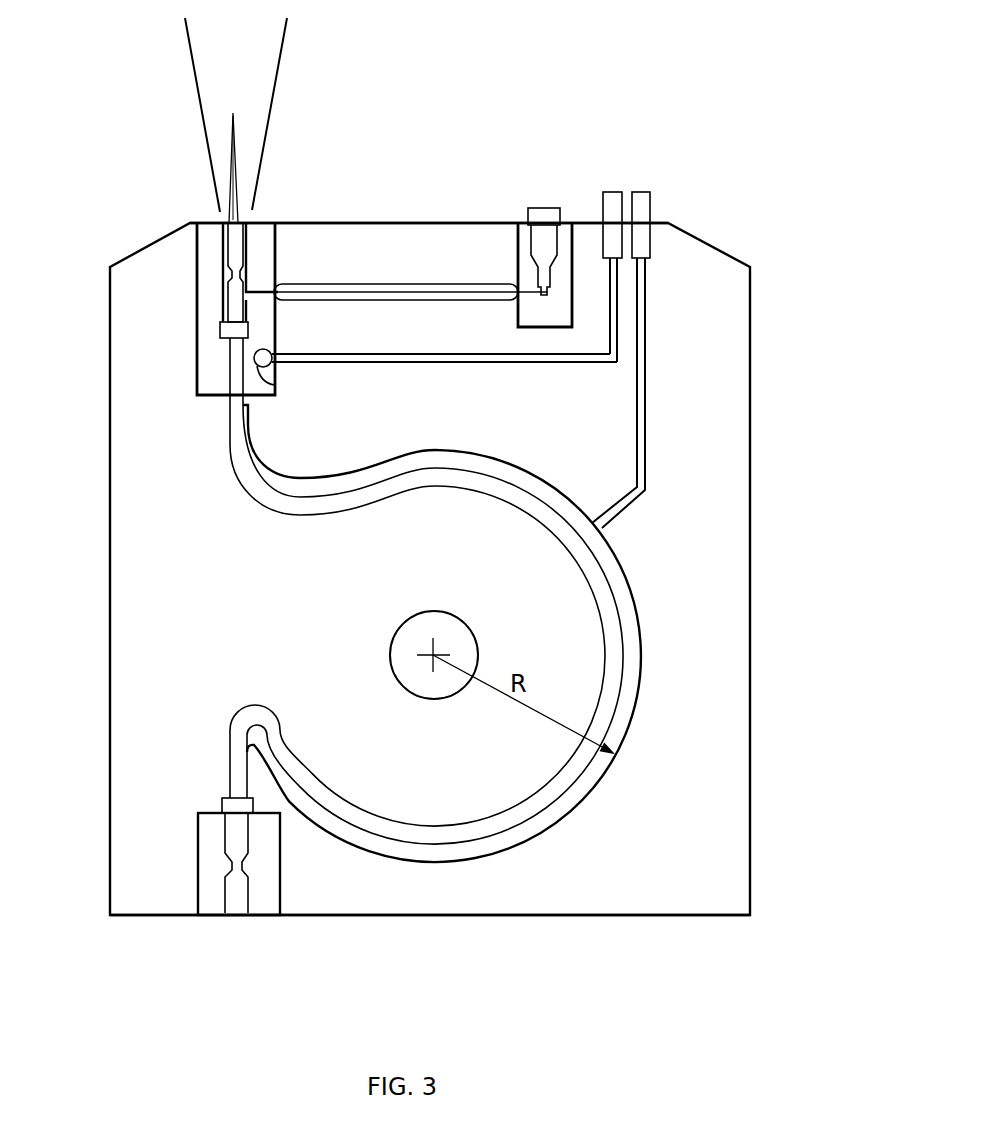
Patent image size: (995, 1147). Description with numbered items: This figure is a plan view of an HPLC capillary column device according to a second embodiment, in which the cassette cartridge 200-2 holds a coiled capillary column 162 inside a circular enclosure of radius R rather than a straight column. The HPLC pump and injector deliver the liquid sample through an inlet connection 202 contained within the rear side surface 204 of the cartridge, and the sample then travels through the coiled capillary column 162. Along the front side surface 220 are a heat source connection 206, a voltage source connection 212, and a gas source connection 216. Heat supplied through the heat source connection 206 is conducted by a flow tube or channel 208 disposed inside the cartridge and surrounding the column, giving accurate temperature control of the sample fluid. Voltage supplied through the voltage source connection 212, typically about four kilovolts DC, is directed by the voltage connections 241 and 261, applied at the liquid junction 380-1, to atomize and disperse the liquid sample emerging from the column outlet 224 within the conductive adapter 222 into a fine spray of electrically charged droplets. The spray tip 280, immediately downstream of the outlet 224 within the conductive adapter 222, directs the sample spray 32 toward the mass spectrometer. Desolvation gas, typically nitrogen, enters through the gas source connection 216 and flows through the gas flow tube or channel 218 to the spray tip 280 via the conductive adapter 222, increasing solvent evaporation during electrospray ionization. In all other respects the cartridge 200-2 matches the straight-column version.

The sample spray 32 is at (189, 43).
The spray tip 280 is at (231, 157).
The front side surface 220 is at (304, 223).
The outlet of the capillary column 224 is at (232, 272).
The conductive adapter 222 is at (197, 312).
The voltage connection 261 is at (270, 348).
The gas flow tube or channel 218 is at (470, 302).
The voltage connection 241 is at (276, 386).
The liquid junction 380-1 is at (231, 361).
The gas source connection 216 is at (537, 208).
The voltage source connection 212 is at (612, 192).
The heat source connection 206 is at (652, 210).
The flow tube or channel 208 is at (647, 408).
The coiled capillary column 162 is at (515, 506).
The cassette cartridge 200-2 is at (750, 588).
The inlet connection 202 is at (235, 917).
The rear side surface 204 is at (672, 917).